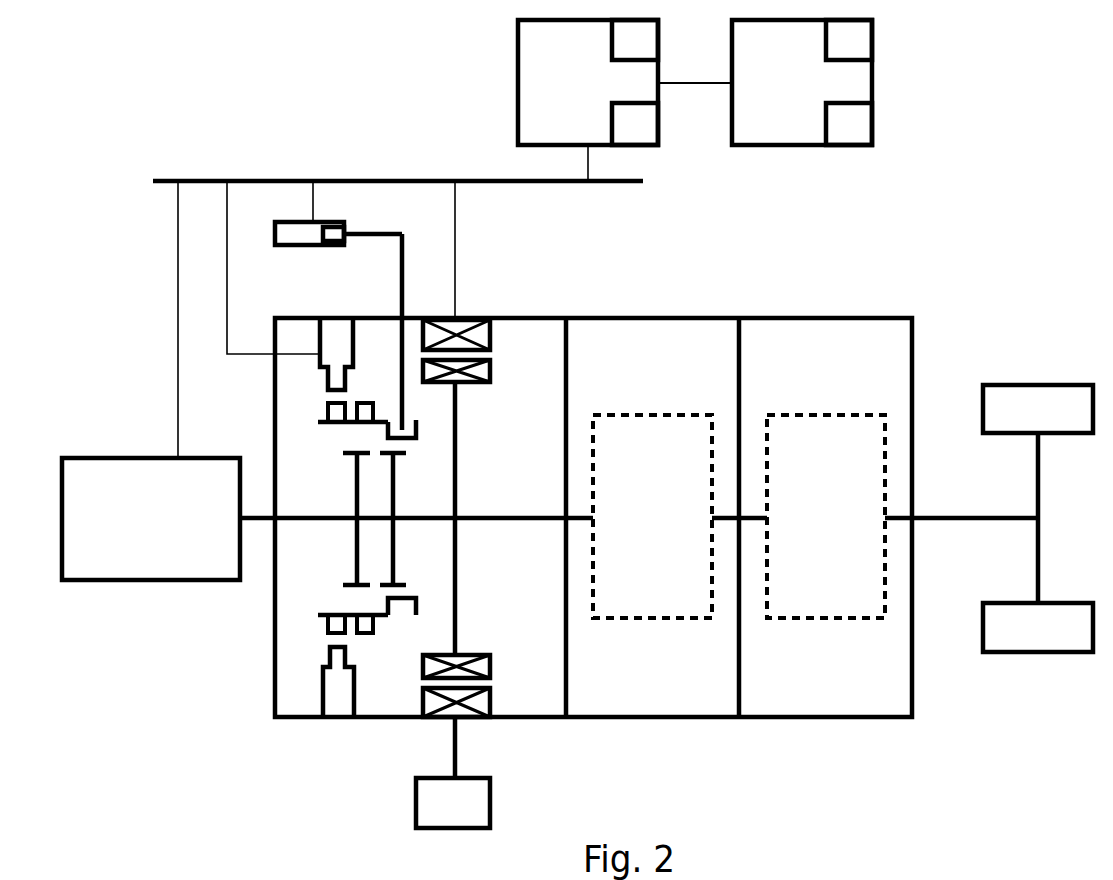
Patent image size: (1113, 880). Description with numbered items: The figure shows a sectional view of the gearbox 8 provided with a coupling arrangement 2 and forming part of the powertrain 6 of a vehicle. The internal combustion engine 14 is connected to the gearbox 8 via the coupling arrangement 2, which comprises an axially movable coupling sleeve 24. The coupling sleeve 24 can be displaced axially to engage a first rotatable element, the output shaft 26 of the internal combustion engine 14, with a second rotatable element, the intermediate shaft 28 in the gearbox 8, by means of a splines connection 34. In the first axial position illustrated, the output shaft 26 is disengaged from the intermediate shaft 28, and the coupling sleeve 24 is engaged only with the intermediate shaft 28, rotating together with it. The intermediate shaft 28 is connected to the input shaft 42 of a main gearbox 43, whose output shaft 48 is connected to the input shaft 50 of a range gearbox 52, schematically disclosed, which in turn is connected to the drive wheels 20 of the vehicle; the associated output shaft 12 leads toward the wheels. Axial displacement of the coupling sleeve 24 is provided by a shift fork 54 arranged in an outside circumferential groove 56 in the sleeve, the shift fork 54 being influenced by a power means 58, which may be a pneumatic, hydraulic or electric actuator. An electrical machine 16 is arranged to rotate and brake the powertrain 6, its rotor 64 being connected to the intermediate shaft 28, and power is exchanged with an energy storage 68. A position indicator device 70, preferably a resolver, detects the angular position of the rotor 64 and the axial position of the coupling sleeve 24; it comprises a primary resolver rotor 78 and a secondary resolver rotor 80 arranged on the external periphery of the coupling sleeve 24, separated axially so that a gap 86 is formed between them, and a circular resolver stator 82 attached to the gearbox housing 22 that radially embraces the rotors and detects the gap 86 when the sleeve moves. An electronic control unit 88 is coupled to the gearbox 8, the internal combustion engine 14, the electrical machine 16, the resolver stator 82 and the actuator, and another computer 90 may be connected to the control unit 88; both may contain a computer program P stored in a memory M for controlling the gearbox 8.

The coupling arrangement 2 is at (308, 445).
The powertrain 6 is at (207, 722).
The gearbox 8 is at (720, 740).
The output shaft / axle 12 is at (980, 518).
The internal combustion engine 14 is at (152, 582).
The electrical machine 16 is at (388, 343).
The drive wheels 20 is at (1048, 653).
The gearbox housing 22 is at (528, 318).
The axially movable coupling sleeve 24 is at (333, 427).
The output shaft 26 is at (298, 520).
The intermediate shaft 28 is at (500, 518).
The splines connection 34 is at (408, 440).
The input shaft 42 is at (578, 515).
The main gearbox 43 is at (633, 413).
The output shaft 48 is at (725, 520).
The input shaft 50 is at (753, 515).
The range gearbox 52 is at (818, 413).
The shift fork 54 is at (367, 230).
The circumferential groove 56 is at (397, 428).
The power means 58 is at (295, 218).
The rotor 64 is at (482, 382).
The energy storage 68 is at (415, 802).
The position indicator device 70 is at (307, 397).
The primary resolver rotor 78 is at (330, 633).
The secondary resolver rotor 80 is at (372, 633).
The resolver stator 82 is at (322, 698).
The gap 86 is at (348, 633).
The electronic control unit 88 is at (515, 62).
The computer 90 is at (873, 83).